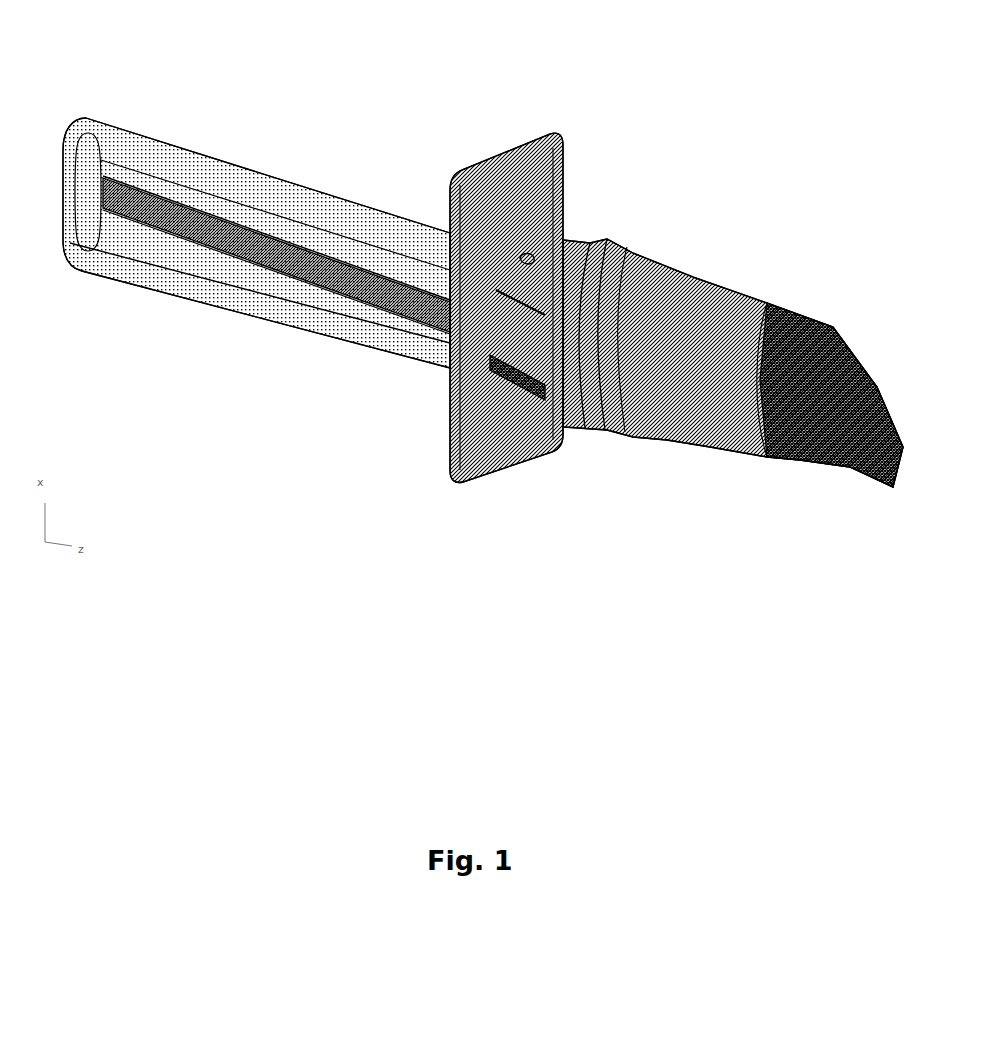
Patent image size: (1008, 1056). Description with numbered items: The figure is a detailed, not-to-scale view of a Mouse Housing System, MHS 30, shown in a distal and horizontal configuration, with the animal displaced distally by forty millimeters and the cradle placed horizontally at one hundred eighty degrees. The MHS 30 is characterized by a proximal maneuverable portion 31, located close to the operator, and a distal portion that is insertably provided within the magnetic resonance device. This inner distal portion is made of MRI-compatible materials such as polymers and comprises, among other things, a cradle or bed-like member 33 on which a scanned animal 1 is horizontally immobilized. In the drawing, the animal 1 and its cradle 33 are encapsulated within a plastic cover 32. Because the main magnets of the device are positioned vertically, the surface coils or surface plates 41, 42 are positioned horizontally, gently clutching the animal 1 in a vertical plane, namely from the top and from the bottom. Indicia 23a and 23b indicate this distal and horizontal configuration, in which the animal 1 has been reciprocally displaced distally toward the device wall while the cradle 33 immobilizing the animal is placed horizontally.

The scanned animal 1 is at (230, 257).
The Mouse Housing System (MHS) 30 is at (632, 134).
The proximal maneuverable portion 31 is at (618, 348).
The plastic cover 32 is at (63, 207).
The cradle or bed-like member 33 is at (207, 267).
The surface coil or surface plate 41 is at (180, 212).
The surface coil or surface plate 42 is at (157, 268).
The indicia 23a is at (527, 263).
The indicia 23b is at (555, 380).